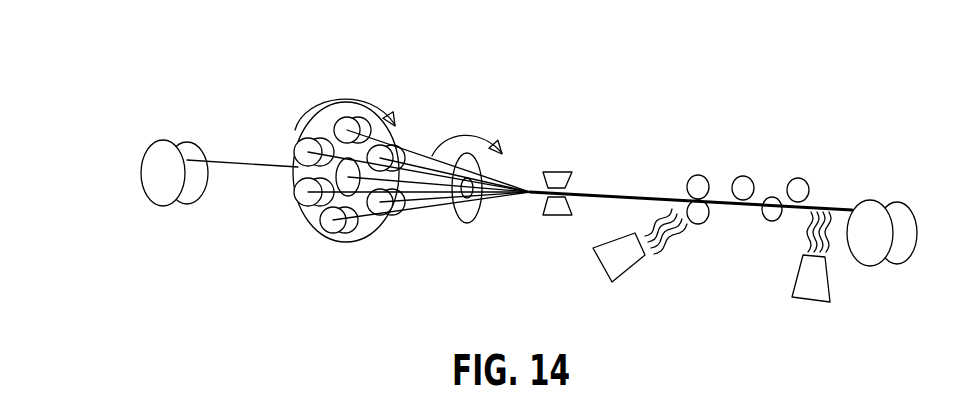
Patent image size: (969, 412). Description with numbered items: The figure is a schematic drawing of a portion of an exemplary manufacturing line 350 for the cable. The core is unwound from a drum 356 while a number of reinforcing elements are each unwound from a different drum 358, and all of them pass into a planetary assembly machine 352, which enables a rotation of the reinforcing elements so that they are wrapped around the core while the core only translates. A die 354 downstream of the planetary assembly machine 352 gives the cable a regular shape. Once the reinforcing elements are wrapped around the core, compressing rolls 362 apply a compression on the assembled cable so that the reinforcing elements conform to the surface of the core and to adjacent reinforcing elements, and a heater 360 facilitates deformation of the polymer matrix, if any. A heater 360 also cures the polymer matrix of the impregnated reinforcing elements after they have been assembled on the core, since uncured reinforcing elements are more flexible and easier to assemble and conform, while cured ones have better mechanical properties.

The manufacturing line 350 is at (487, 191).
The planetary assembly machine 352 is at (366, 162).
The die 354 is at (556, 172).
The drum 356 is at (152, 172).
The drum 358 is at (383, 155).
The heater 360 is at (637, 277).
The compressing rolls 362 is at (730, 160).